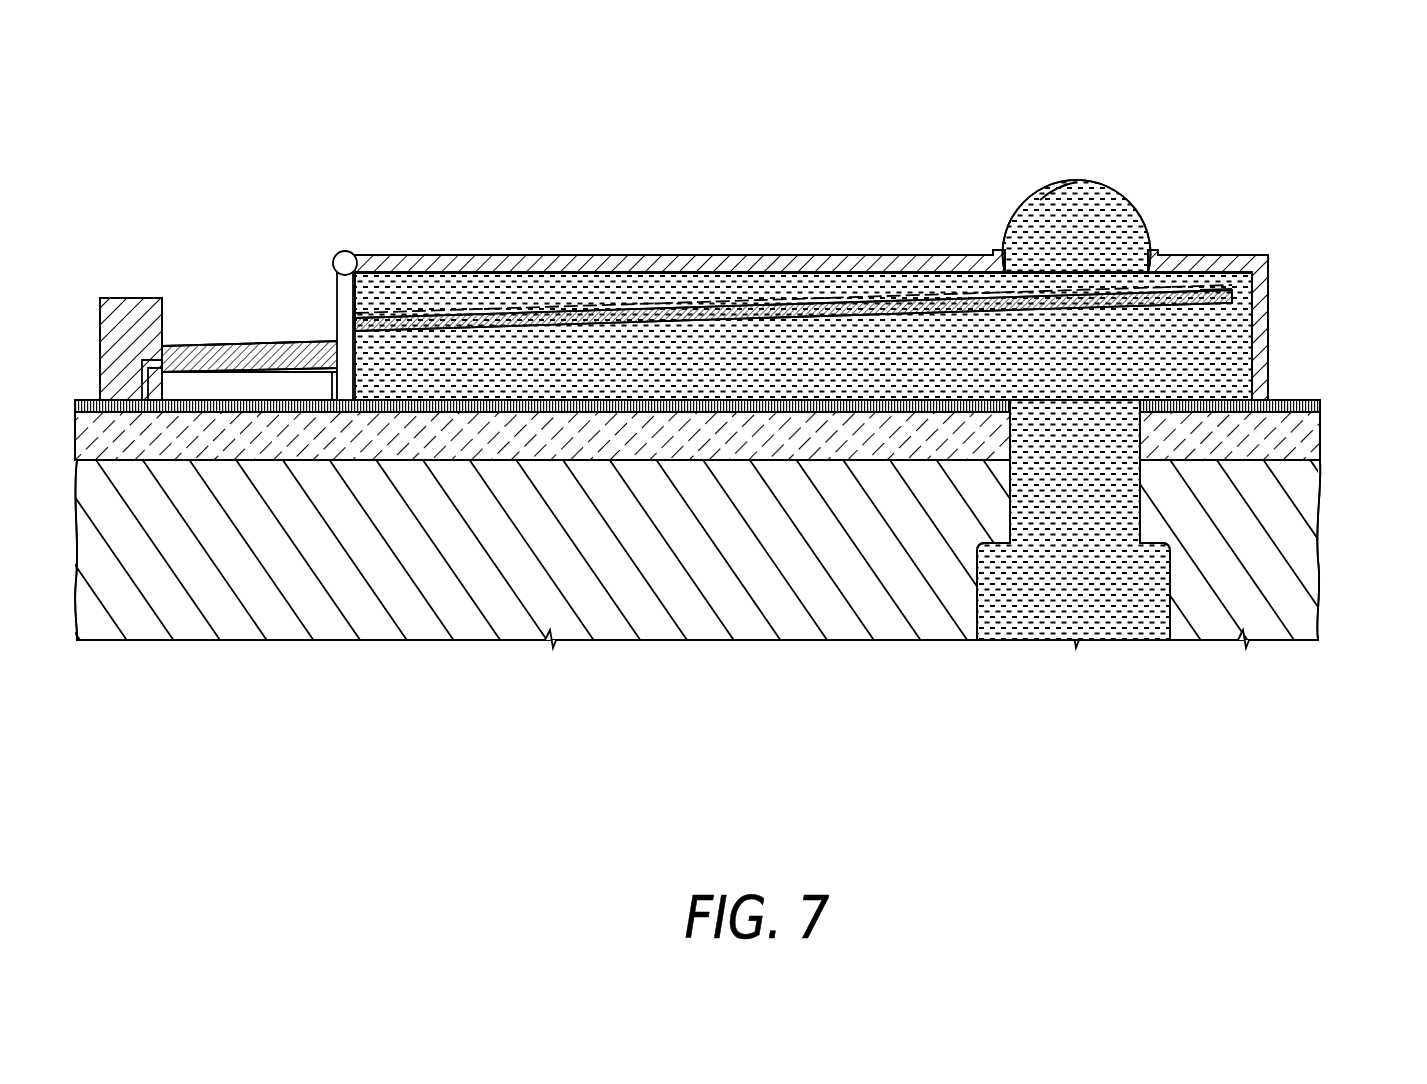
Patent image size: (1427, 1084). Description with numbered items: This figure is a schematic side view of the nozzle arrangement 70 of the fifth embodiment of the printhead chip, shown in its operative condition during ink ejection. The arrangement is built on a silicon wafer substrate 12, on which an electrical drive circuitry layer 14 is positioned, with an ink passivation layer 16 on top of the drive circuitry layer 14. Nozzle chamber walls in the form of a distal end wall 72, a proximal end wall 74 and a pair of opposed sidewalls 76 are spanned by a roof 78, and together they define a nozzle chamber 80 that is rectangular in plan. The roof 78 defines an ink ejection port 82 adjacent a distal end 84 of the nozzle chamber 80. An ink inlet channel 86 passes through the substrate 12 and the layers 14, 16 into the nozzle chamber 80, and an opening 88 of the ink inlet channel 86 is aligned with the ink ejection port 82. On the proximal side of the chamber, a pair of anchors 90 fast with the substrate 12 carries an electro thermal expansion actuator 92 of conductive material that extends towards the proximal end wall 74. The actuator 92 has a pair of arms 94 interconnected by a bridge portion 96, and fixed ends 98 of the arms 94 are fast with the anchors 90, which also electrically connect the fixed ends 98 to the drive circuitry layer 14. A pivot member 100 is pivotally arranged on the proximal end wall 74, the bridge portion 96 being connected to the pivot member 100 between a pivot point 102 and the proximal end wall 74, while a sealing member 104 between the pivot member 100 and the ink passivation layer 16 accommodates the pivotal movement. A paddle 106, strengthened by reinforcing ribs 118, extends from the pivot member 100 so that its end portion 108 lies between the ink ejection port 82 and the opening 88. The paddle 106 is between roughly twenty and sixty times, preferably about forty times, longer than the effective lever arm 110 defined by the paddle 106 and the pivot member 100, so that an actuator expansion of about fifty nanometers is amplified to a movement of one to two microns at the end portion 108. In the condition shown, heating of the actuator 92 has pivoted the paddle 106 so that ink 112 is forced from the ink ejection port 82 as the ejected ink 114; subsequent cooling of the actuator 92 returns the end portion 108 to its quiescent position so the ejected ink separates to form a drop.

The silicon wafer substrate 12 is at (1322, 520).
The electrical drive circuitry layer 14 is at (1322, 440).
The ink passivation layer 16 is at (1322, 404).
The nozzle arrangement 70 is at (1342, 180).
The distal end wall 72 is at (1268, 292).
The proximal end wall 74 is at (305, 269).
The sidewalls 76 is at (593, 290).
The roof 78 is at (752, 256).
The nozzle chamber 80 is at (840, 292).
The ink ejection port 82 is at (1110, 245).
The distal end 84 is at (1220, 348).
The ink inlet channel 86 is at (1018, 612).
The opening 88 is at (1118, 392).
The anchors 90 is at (132, 298).
The electro thermal expansion actuator 92 is at (205, 344).
The arms 94 is at (245, 344).
The bridge portion 96 is at (333, 370).
The fixed ends 98 is at (165, 345).
The pivot member 100 is at (363, 293).
The pivot point 102 is at (345, 250).
The sealing member 104 is at (336, 398).
The paddle 106 is at (905, 300).
The end portion 108 is at (1200, 290).
The effective lever arm 110 is at (373, 256).
The ink 112 is at (670, 282).
The ejected ink 114 is at (1072, 182).
The reinforcing ribs 118 is at (533, 272).